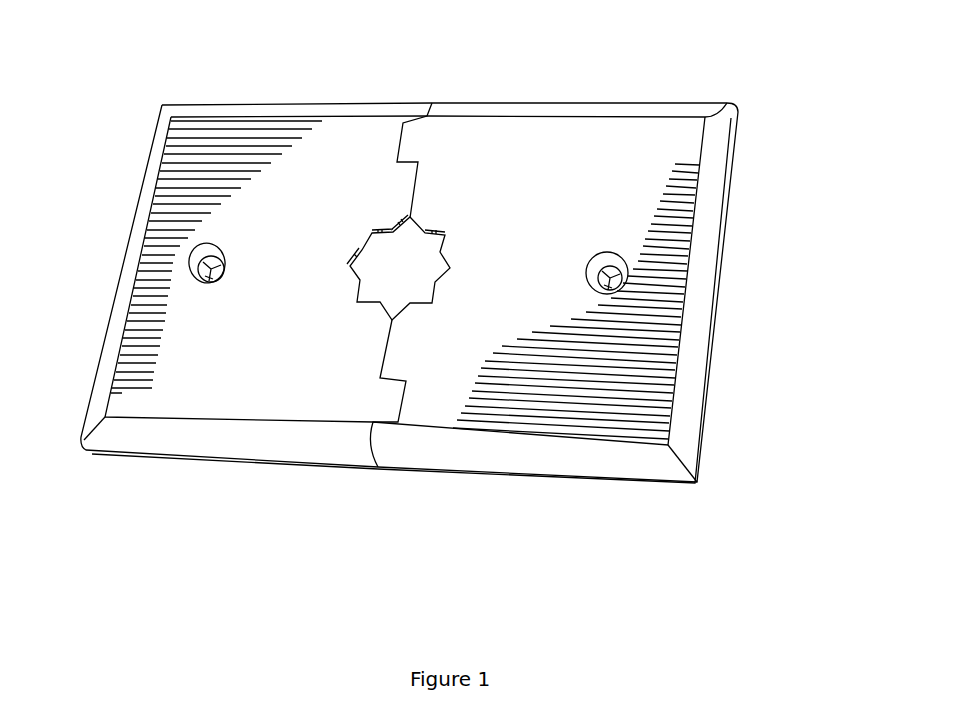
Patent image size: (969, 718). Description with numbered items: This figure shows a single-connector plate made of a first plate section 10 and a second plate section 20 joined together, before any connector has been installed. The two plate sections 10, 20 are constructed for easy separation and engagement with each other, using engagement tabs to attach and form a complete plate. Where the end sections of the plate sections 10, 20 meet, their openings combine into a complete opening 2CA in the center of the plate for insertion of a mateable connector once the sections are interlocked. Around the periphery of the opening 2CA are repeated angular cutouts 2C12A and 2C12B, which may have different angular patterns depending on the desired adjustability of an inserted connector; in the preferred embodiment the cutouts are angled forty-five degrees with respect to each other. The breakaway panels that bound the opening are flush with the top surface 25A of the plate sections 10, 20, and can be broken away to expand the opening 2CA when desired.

The first plate section 10 is at (133, 455).
The second plate section 20 is at (583, 484).
The top surface 25A is at (203, 343).
The complete opening 2CA is at (411, 260).
The angular cutout 2C12A is at (355, 262).
The angular cutout 2C12B is at (386, 237).